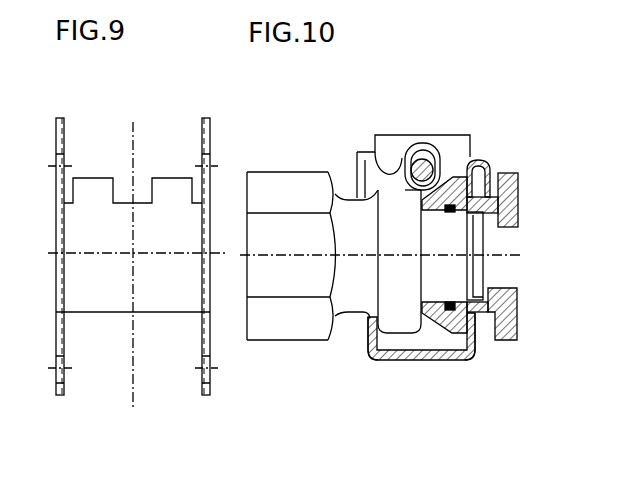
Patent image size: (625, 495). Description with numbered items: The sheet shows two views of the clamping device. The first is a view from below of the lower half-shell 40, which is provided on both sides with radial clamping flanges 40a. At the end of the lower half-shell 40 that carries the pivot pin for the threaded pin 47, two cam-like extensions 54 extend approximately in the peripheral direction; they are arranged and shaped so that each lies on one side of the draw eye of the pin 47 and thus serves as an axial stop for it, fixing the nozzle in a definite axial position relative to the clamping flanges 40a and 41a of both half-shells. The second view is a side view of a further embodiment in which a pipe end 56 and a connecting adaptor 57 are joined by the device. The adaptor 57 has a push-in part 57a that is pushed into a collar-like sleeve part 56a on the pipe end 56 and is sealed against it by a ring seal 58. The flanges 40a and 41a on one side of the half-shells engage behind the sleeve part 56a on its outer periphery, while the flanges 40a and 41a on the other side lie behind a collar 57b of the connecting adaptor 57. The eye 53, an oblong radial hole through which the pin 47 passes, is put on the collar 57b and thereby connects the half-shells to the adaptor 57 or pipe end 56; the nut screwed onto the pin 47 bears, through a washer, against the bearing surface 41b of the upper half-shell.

In FIG. 9, the lower half-shell 40 is at (167, 280).
In FIG. 10, the lower half-shell 40 is at (472, 360).
In FIG. 10, the radial clamping flange 40a is at (475, 328).
In FIG. 9, the cam-like extension 54 is at (173, 190).
In FIG. 10, the radial clamping flange 41a is at (360, 195).
In FIG. 10, the bearing surface 41b is at (458, 145).
In FIG. 10, the pin 47 is at (424, 168).
In FIG. 10, the eye 53 is at (403, 148).
In FIG. 10, the pipe end 56 is at (507, 212).
In FIG. 10, the sleeve part 56a is at (480, 183).
In FIG. 10, the connecting adaptor 57 is at (362, 268).
In FIG. 10, the push-in part 57a is at (442, 266).
In FIG. 10, the collar 57b is at (395, 308).
In FIG. 10, the ring seal 58 is at (495, 313).